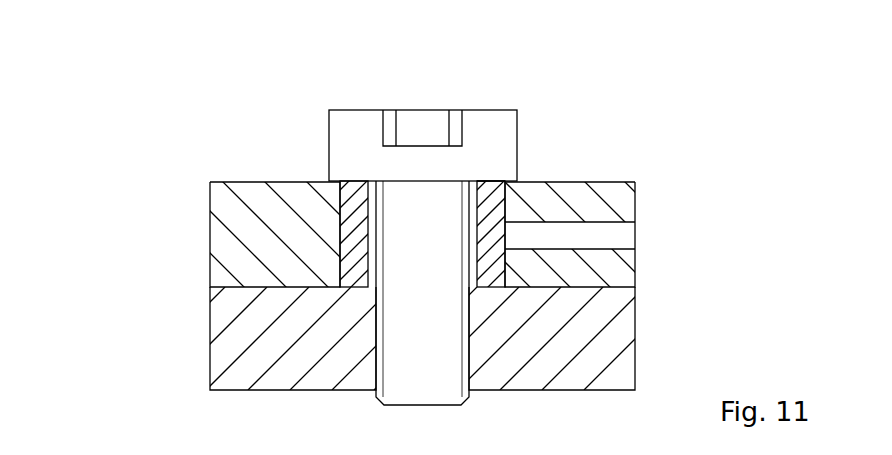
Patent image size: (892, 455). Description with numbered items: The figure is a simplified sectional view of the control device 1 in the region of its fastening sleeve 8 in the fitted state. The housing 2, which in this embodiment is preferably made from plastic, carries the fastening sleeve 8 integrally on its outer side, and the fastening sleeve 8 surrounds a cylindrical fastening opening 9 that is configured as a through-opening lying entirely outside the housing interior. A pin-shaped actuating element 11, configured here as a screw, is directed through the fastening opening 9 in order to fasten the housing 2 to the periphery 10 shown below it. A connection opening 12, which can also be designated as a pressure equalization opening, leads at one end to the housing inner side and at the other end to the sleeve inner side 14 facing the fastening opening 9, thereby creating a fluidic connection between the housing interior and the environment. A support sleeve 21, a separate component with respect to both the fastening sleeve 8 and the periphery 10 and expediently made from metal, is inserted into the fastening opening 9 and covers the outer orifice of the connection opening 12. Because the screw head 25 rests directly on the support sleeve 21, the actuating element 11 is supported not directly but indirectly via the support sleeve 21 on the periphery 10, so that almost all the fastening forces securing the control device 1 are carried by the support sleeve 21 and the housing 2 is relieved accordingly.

The control device 1 is at (157, 134).
The housing 2 is at (199, 235).
The fastening sleeve 8 is at (254, 171).
The fastening opening 9 is at (338, 217).
The periphery 10 is at (199, 337).
The actuating element 11 is at (346, 98).
The connection opening 12 is at (617, 232).
The sleeve inner side 14 is at (505, 265).
The support sleeve 21 is at (490, 193).
The screw head 25 is at (372, 127).